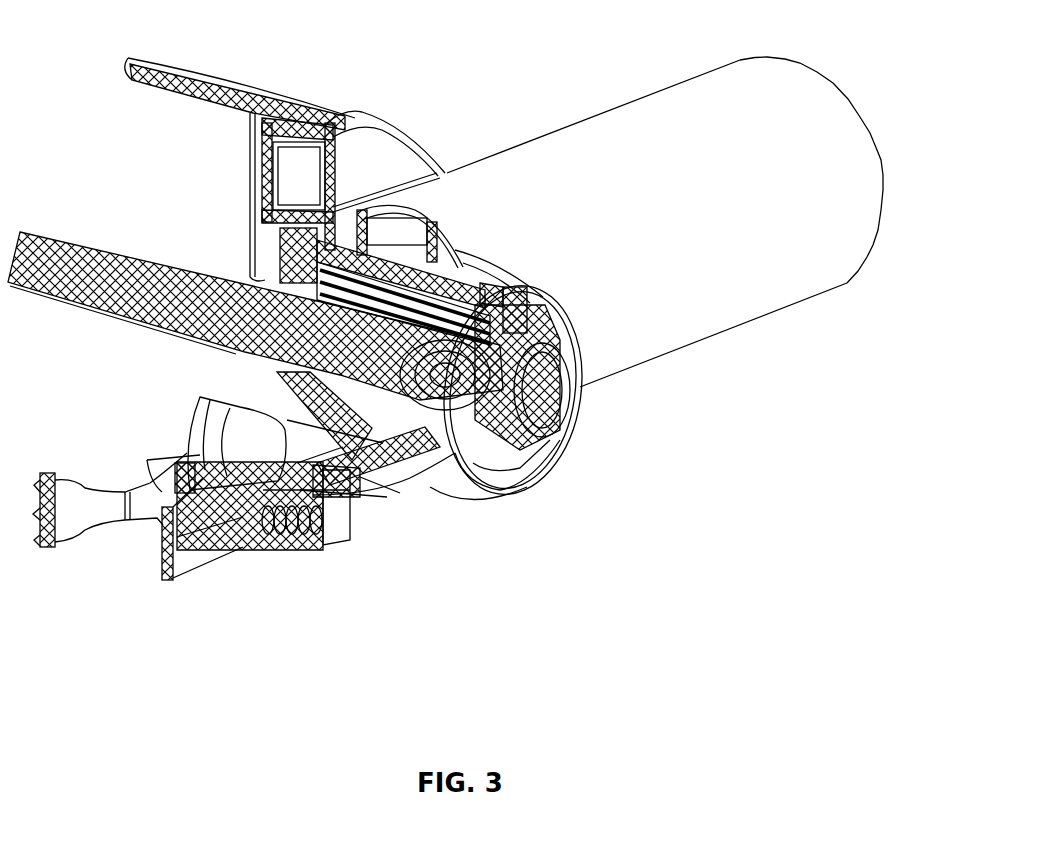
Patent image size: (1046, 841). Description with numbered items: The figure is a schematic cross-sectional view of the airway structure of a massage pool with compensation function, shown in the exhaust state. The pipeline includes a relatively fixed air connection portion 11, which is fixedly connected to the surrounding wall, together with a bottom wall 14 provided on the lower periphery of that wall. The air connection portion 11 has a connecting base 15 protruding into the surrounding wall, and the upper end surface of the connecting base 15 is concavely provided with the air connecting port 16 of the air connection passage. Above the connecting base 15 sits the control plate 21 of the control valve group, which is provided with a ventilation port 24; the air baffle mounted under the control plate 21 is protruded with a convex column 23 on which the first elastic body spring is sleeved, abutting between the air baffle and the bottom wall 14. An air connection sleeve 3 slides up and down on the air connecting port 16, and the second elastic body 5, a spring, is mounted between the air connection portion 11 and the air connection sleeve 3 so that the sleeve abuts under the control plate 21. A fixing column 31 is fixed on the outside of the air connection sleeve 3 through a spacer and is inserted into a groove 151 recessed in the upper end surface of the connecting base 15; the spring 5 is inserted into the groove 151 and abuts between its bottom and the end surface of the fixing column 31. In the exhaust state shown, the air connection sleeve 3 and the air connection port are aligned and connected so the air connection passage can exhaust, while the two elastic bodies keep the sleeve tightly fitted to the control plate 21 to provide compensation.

The air connection portion 11 is at (712, 274).
The control plate 21 is at (298, 118).
The convex column 23 is at (565, 423).
The second elastic body 5 is at (535, 345).
The air connection sleeve 3 is at (253, 445).
The ventilation port 24 is at (203, 443).
The fixing column 31 is at (182, 548).
The groove 151 is at (247, 547).
The connecting base 15 is at (330, 497).
The air connecting port 16 is at (423, 473).
The bottom wall 14 is at (527, 487).